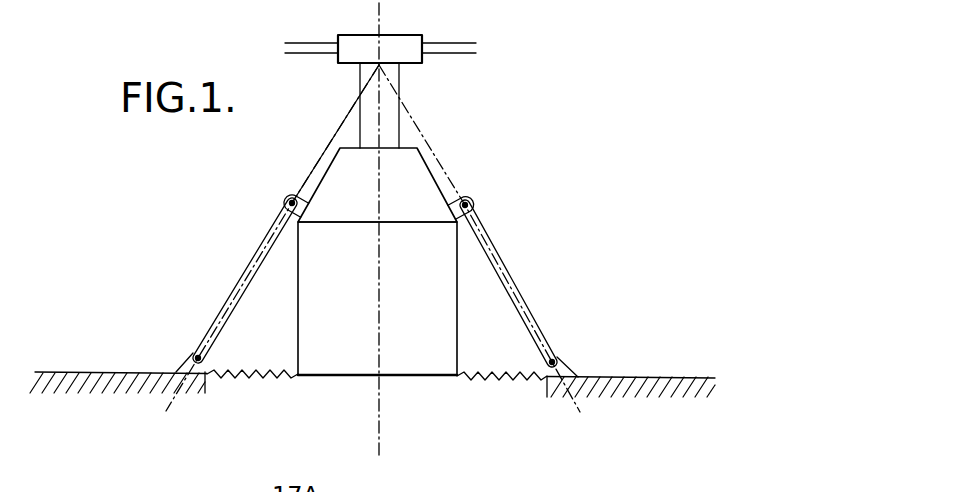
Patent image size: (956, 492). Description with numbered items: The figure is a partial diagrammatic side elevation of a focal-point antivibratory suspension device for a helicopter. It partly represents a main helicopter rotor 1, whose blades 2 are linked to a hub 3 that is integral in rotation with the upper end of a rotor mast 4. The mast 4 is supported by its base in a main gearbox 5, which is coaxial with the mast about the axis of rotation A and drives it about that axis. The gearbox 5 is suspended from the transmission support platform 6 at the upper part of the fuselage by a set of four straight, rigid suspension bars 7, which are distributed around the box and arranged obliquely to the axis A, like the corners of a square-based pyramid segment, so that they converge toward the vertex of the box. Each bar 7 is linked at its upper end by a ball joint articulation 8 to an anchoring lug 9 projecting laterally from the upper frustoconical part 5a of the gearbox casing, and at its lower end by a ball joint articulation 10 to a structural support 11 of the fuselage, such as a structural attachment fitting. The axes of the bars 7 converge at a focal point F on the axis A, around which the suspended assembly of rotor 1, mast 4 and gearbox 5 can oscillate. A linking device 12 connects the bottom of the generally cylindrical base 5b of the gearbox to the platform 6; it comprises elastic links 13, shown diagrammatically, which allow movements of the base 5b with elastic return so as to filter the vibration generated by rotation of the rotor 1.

The main helicopter rotor 1 is at (497, 55).
The blades 2 is at (460, 50).
The hub 3 is at (413, 50).
The rotor mast 4 is at (370, 120).
The main gearbox 5 is at (426, 252).
The upper frustoconical part 5a is at (433, 158).
The base of the gearbox 5b is at (440, 343).
The transmission support platform 6 is at (643, 388).
The suspension bars 7 is at (242, 288).
The ball joint articulation 8 is at (471, 207).
The anchoring lug 9 is at (469, 197).
The ball joint articulation 10 is at (556, 358).
The structural support 11 is at (567, 370).
The linking device 12 is at (245, 360).
The elastic links 13 is at (268, 377).
The axis of rotation A is at (382, 26).
The focal point F is at (377, 65).